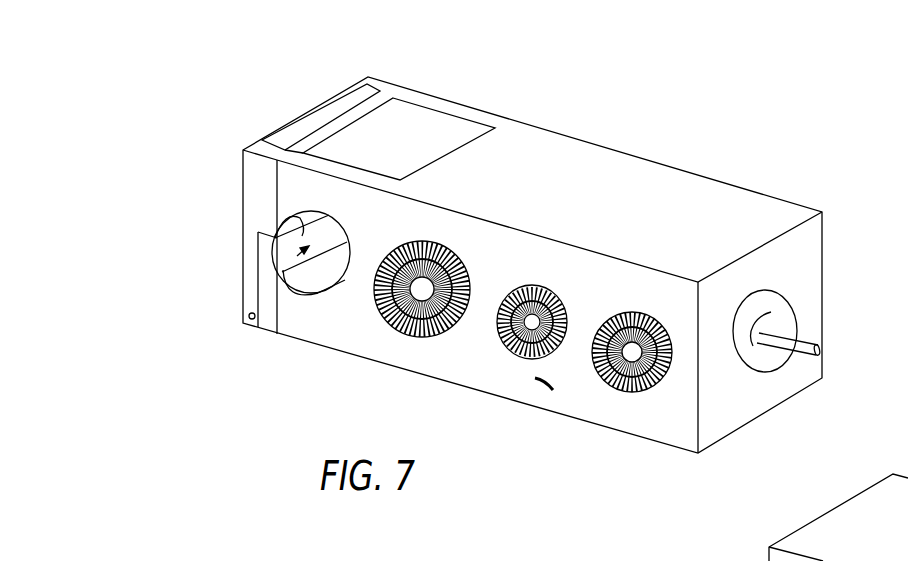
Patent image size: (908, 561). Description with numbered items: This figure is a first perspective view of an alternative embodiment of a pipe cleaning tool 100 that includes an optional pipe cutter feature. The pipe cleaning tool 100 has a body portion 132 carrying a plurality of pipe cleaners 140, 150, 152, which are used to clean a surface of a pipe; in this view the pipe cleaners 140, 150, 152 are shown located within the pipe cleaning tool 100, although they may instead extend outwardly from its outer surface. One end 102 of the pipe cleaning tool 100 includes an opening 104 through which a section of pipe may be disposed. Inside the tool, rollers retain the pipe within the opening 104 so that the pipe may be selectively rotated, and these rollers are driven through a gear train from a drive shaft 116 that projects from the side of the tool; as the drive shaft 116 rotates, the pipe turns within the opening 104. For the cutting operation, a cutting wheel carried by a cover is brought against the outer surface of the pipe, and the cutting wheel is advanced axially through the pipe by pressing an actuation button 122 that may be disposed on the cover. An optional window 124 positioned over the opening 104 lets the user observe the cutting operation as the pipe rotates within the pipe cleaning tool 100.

The pipe cleaning tool 100 is at (632, 128).
The end 102 is at (233, 252).
The opening 104 is at (292, 260).
The drive shaft 116 is at (806, 337).
The actuation button 122 is at (305, 122).
The window 124 is at (422, 122).
The body portion 132 is at (535, 392).
The pipe cleaner 140 is at (390, 318).
The pipe cleaner 150 is at (503, 342).
The pipe cleaner 152 is at (607, 381).